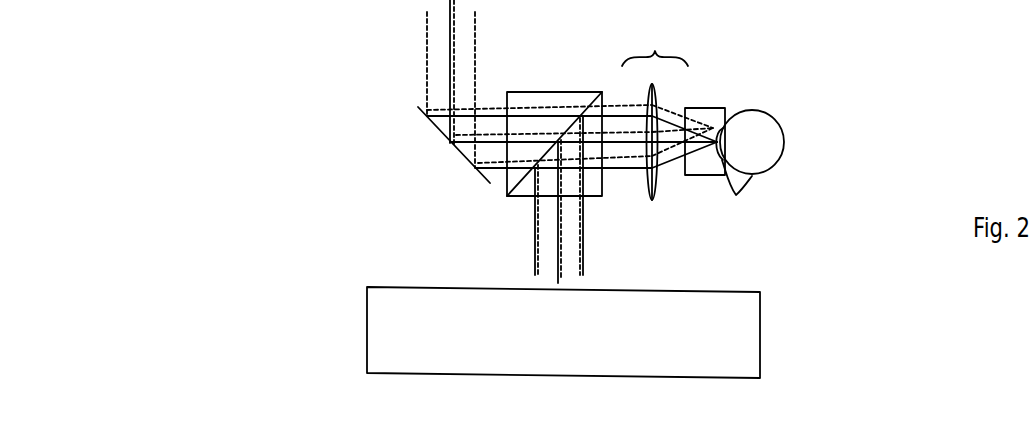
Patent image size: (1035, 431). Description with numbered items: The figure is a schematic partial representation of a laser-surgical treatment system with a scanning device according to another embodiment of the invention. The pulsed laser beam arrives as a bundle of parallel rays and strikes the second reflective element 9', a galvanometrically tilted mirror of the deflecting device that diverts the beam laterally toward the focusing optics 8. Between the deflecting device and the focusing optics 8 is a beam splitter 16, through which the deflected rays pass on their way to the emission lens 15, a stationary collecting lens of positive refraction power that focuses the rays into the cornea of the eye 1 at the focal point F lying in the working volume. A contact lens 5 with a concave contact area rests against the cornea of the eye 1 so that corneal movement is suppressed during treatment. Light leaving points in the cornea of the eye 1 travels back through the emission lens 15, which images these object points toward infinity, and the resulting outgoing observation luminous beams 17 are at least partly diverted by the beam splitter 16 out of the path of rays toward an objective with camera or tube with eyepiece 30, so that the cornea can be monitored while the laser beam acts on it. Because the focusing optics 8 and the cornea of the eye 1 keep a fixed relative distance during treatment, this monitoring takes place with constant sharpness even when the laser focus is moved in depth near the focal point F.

The eye 1 is at (772, 123).
The contact lens 5 is at (703, 108).
The focusing optics 8 is at (659, 131).
The second reflective element 9' is at (454, 169).
The emission lens 15 is at (655, 200).
The beam splitter 16 is at (538, 92).
The observation luminous beams 17 is at (586, 223).
The objective with camera or tube with eyepiece 30 is at (366, 316).
The focal point F is at (755, 177).